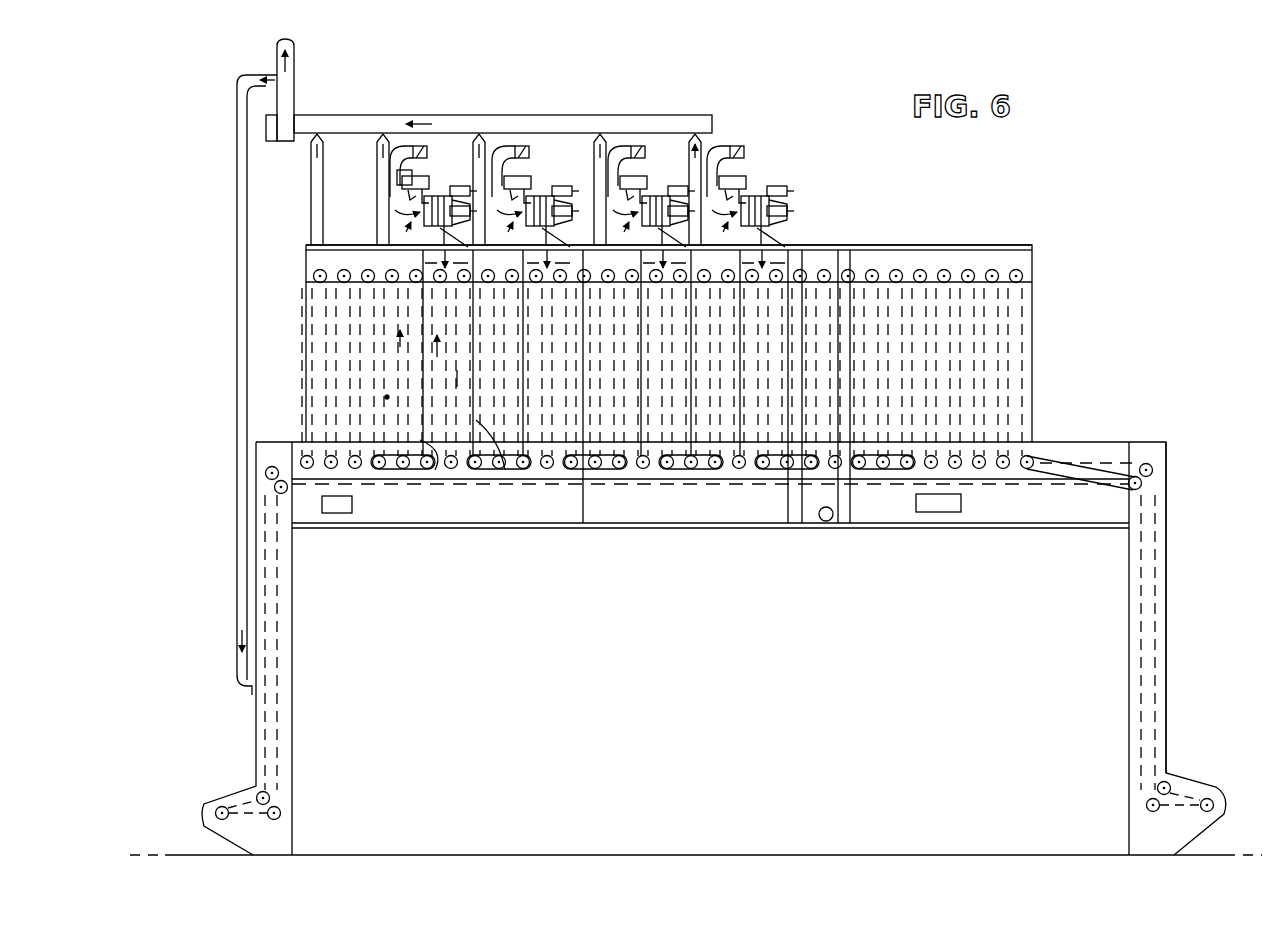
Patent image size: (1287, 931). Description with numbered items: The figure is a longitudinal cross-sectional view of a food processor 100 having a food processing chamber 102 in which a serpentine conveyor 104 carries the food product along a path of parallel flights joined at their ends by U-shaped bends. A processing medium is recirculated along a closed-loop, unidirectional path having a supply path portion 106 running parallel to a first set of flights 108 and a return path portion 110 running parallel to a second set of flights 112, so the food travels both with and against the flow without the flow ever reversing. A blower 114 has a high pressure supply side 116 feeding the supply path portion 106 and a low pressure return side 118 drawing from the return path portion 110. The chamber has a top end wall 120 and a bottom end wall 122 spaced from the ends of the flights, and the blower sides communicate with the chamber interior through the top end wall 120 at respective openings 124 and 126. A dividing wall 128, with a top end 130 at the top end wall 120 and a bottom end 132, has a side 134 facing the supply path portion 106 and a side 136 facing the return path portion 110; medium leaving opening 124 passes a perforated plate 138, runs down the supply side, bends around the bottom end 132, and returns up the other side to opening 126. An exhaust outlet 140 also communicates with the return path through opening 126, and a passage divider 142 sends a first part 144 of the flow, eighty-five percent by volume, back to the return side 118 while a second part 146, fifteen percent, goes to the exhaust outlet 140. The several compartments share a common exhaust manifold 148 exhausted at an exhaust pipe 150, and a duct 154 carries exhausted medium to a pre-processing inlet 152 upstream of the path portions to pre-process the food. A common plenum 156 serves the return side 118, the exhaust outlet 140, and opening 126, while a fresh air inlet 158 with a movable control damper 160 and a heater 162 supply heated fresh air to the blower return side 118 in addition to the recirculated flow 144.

The food processor 100 is at (1000, 240).
The food processing chamber 102 is at (306, 309).
The serpentine conveyor 104 is at (312, 413).
The supply path portion 106 is at (437, 350).
The first set of flights 108 is at (457, 378).
The return path portion 110 is at (397, 347).
The second set of flights 112 is at (387, 397).
The blower 114 is at (440, 212).
The high pressure supply side 116 is at (487, 240).
The low pressure return side 118 is at (430, 200).
The top end wall 120 is at (890, 245).
The bottom end wall 122 is at (593, 528).
The opening 124 is at (523, 210).
The opening 126 is at (395, 218).
The dividing wall 128 is at (427, 312).
The top end of dividing wall 130 is at (413, 280).
The bottom end of dividing wall 132 is at (428, 450).
The side of dividing wall 134 is at (478, 418).
The side of dividing wall 136 is at (427, 432).
The perforated plate 138 is at (550, 250).
The exhaust outlet 140 is at (400, 195).
The passage divider 142 is at (398, 205).
The first part of processing medium flow 144 is at (413, 258).
The second part of processing medium flow 146 is at (400, 242).
The common exhaust manifold 148 is at (585, 115).
The exhaust pipe 150 is at (295, 62).
The pre-processing inlet 152 is at (250, 695).
The duct 154 is at (236, 405).
The common plenum 156 is at (403, 176).
The fresh air inlet 158 is at (418, 146).
The movable control damper 160 is at (403, 170).
The heater 162 is at (410, 195).